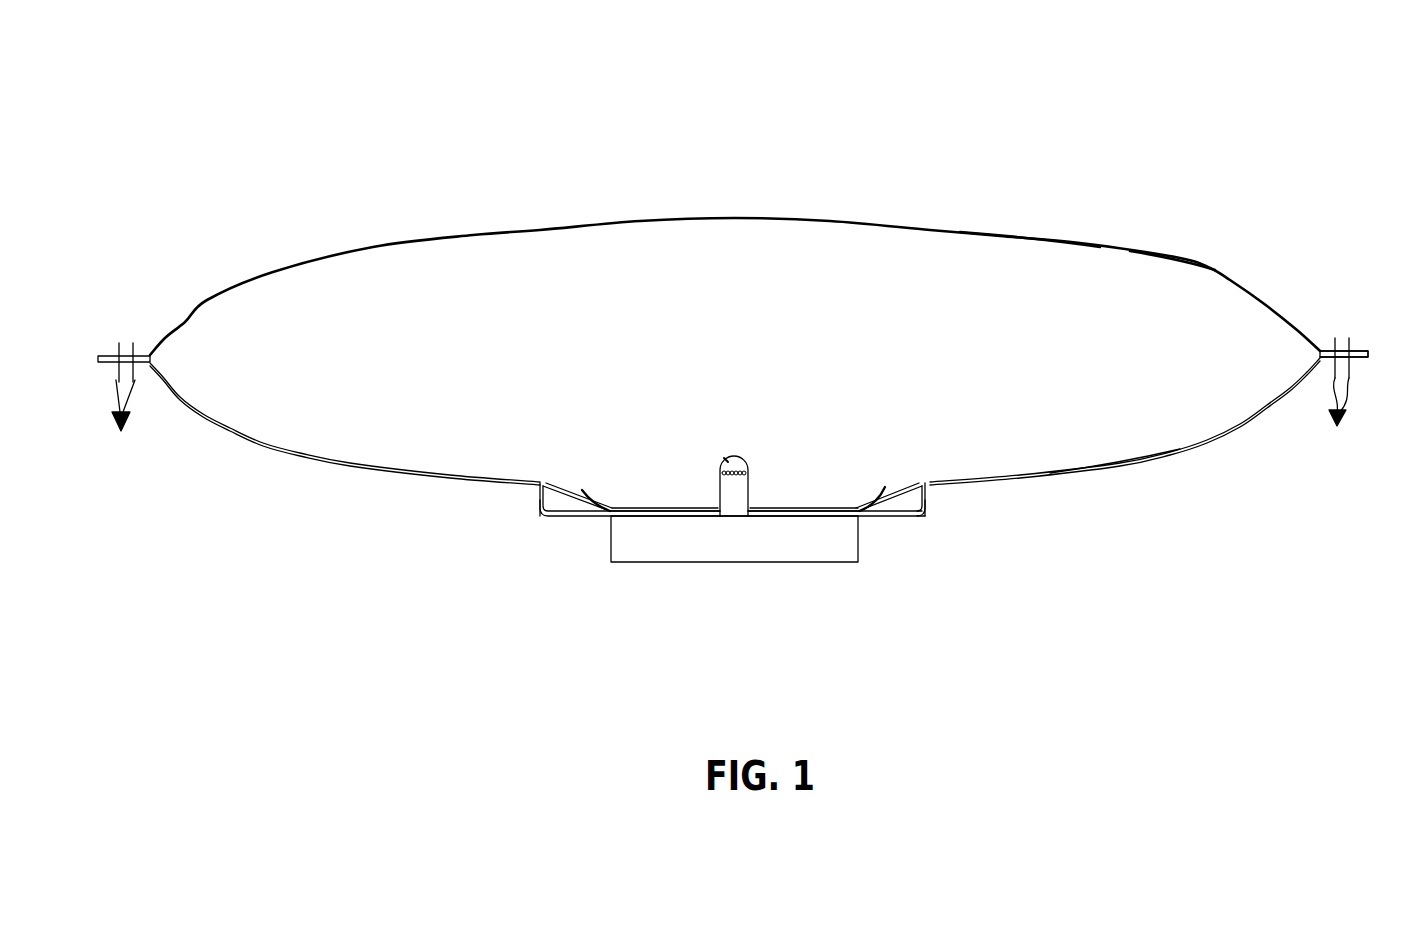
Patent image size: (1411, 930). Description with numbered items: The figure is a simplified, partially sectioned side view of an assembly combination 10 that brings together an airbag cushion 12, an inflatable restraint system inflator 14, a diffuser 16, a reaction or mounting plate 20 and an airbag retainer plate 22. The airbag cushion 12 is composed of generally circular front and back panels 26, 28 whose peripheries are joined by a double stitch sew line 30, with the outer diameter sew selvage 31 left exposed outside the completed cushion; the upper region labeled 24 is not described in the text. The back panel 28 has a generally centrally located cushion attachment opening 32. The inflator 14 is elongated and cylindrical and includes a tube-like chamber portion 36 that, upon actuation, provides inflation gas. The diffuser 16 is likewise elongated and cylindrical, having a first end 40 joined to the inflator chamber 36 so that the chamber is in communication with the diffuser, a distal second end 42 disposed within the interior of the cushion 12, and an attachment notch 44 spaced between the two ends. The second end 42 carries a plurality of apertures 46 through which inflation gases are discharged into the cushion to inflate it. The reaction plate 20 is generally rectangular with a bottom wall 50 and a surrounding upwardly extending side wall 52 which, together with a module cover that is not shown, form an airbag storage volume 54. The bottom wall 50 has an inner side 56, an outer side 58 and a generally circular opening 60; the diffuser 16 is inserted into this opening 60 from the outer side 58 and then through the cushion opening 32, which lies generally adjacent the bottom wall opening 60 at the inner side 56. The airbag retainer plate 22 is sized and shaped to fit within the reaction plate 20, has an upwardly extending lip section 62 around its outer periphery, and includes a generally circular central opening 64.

The assembly combination 10 is at (735, 267).
The airbag cushion 12 is at (367, 243).
The inflatable restraint system inflator 14 is at (712, 509).
The diffuser 16 is at (763, 509).
The reaction plate 20 is at (926, 516).
The airbag retainer plate 22 is at (636, 507).
The top panel 24 is at (1082, 243).
The front panel 26 is at (1172, 257).
The back panel 28 is at (1115, 463).
The double stitch sew line 30 is at (733, 398).
The outer diameter sew selvage 31 is at (1365, 345).
The cushion attachment opening 32 is at (760, 512).
The chamber portion 36 is at (680, 544).
The first end 40 is at (738, 522).
The second end 42 is at (724, 457).
The attachment notch 44 is at (714, 495).
The apertures 46 is at (750, 472).
The bottom wall 50 is at (578, 522).
The side wall 52 is at (538, 498).
The airbag storage volume 54 is at (549, 518).
The inner side 56 is at (912, 508).
The outer side 58 is at (880, 520).
The opening 60 is at (755, 522).
The lip section 62 is at (594, 490).
The central opening 64 is at (718, 520).